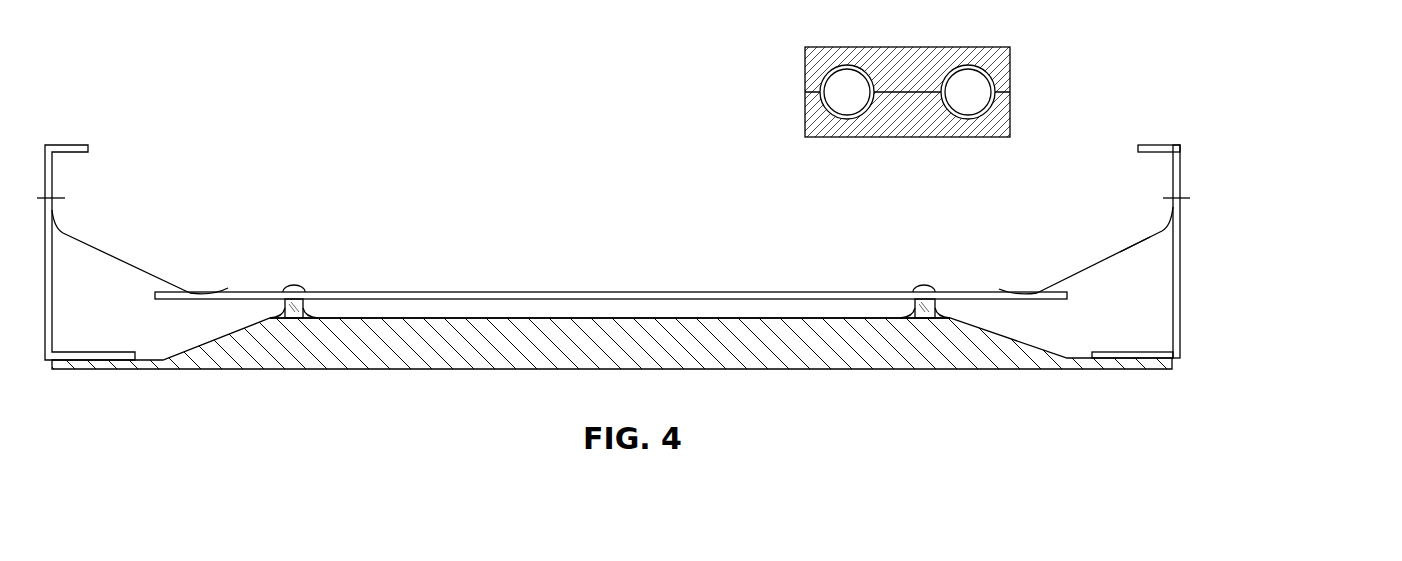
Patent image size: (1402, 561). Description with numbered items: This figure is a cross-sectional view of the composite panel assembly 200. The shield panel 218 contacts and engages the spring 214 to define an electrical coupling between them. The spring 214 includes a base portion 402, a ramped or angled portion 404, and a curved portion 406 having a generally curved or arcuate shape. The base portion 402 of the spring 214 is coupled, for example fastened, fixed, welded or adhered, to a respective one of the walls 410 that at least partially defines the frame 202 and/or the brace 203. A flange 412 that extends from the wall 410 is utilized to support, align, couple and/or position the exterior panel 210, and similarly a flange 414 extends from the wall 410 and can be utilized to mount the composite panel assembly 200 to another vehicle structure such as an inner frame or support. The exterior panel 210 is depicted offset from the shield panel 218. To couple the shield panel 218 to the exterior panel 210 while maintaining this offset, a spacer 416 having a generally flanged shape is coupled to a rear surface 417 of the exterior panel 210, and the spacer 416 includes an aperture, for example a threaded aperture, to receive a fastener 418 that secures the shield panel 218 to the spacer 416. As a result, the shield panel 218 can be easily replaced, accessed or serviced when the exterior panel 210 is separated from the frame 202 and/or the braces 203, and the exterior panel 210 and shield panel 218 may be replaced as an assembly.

The composite panel assembly 200 is at (1150, 68).
The frame 202 is at (1286, 156).
The brace 203 is at (1202, 158).
The exterior panel 210 is at (348, 345).
The spring 214 is at (1135, 258).
The shield panel 218 is at (398, 293).
The base portion 402 is at (1173, 197).
The ramped or angled portion 404 is at (1083, 267).
The curved portion 406 is at (1023, 293).
The wall 410 is at (1180, 240).
The flange 412 is at (1143, 353).
The flange 414 is at (1153, 147).
The spacer 416 is at (898, 317).
The rear surface 417 is at (598, 322).
The fastener 418 is at (937, 292).